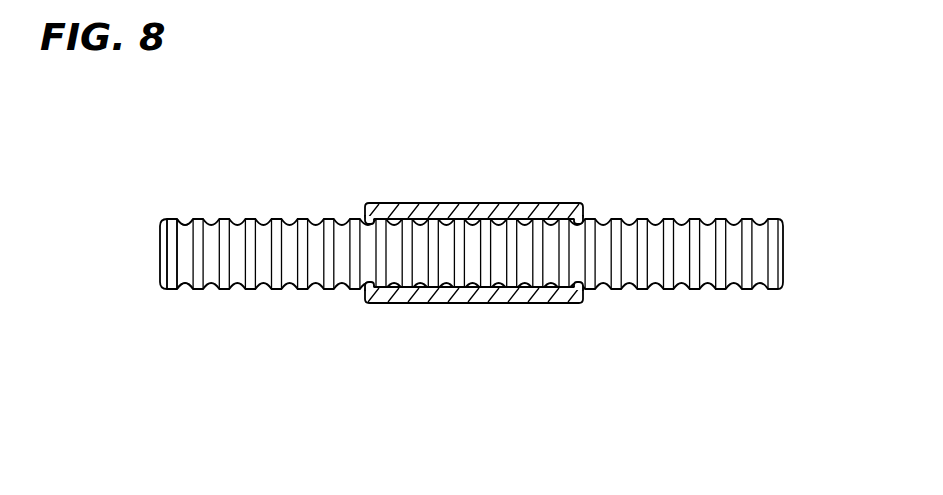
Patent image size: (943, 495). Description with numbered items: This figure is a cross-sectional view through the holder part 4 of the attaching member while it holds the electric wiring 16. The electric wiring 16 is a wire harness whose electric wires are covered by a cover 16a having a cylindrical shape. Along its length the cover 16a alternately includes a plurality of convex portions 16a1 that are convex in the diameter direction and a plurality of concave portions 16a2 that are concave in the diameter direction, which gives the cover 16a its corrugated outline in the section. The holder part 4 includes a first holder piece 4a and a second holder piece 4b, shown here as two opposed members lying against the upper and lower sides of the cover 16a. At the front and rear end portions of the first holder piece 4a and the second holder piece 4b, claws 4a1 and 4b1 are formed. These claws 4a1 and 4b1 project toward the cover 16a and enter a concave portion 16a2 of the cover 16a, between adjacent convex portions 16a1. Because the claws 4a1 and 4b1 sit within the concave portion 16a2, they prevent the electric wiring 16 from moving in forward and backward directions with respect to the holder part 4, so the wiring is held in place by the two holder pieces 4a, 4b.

The holder part 4 is at (494, 255).
The first holder piece 4a is at (494, 334).
The claw 4a1 is at (364, 294).
The second holder piece 4b is at (488, 174).
The claw 4b1 is at (364, 213).
The electric wiring 16 is at (433, 257).
The cover 16a is at (263, 220).
The convex portion 16a1 is at (171, 290).
The concave portion 16a2 is at (185, 290).